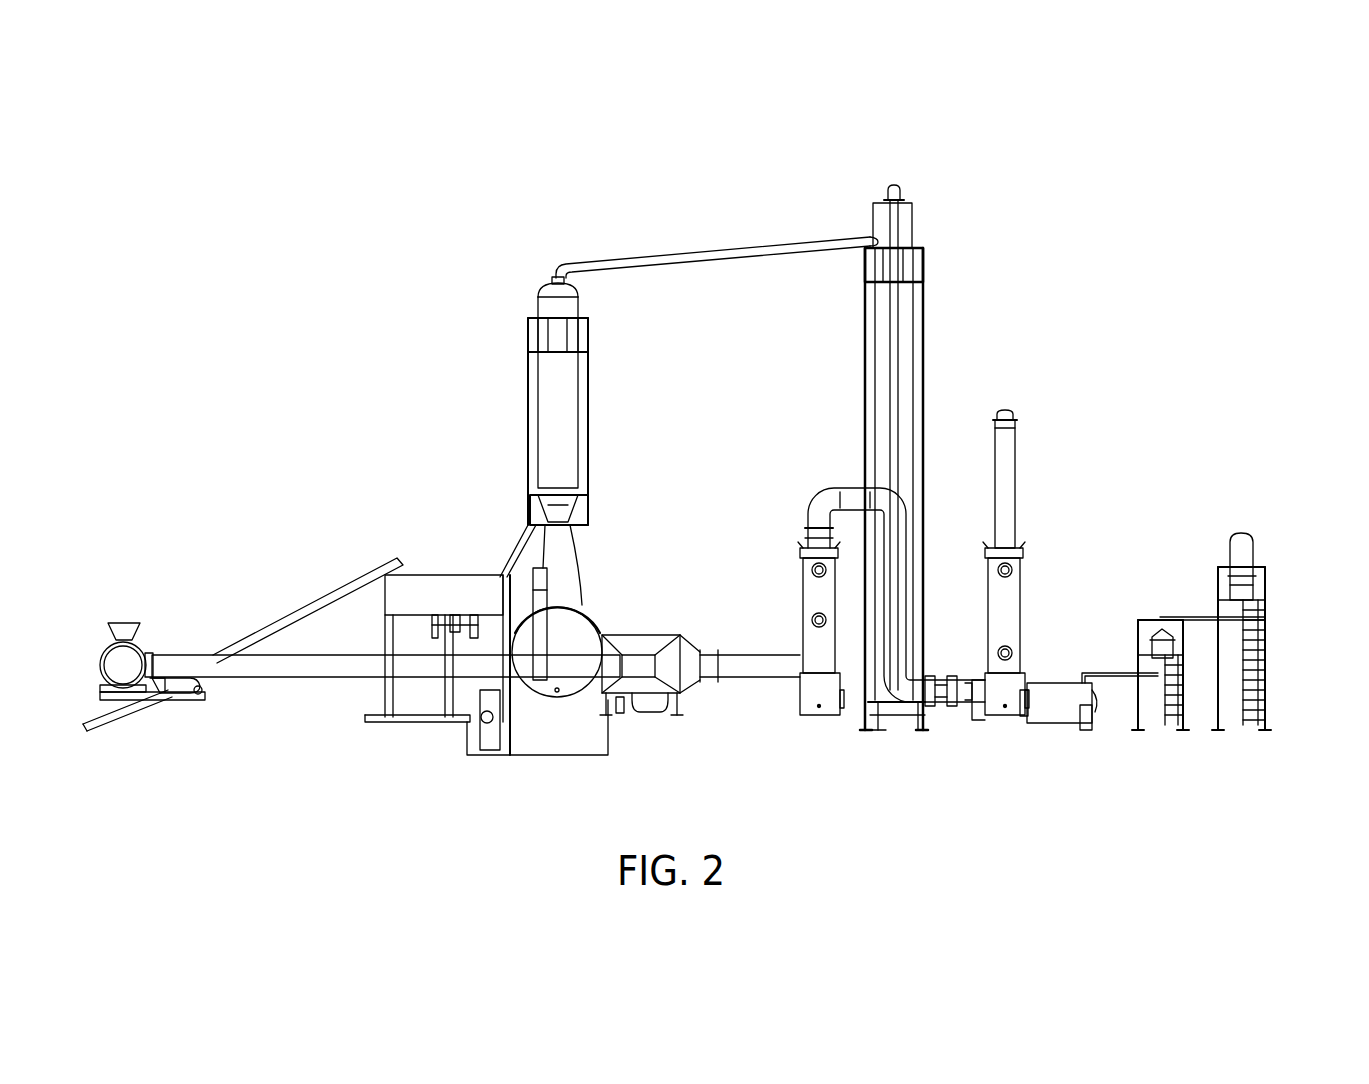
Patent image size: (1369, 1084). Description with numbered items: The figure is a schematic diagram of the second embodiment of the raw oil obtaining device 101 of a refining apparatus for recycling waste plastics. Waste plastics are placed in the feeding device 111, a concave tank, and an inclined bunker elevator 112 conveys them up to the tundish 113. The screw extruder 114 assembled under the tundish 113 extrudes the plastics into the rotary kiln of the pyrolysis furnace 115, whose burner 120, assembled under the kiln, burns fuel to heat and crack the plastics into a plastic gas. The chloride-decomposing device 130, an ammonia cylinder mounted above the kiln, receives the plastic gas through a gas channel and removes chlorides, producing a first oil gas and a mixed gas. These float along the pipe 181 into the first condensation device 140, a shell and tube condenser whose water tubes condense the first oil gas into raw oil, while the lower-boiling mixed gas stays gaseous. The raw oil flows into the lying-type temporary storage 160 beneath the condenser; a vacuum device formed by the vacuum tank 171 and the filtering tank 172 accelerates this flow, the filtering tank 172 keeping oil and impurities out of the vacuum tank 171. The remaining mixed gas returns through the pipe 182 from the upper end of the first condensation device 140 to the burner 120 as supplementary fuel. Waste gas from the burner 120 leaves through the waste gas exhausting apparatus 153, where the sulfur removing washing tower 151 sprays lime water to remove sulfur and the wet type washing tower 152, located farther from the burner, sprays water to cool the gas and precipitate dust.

The raw oil obtaining device 101 is at (222, 234).
The feeding device 111 is at (130, 685).
The bunker elevator 112 is at (292, 620).
The tundish 113 is at (458, 590).
The screw extruder 114 is at (462, 627).
The pyrolysis furnace 115 is at (567, 685).
The burner 120 is at (530, 740).
The chloride-decomposing device 130 is at (548, 425).
The first condensation device 140 is at (905, 222).
The sulfur removing washing tower 151 is at (822, 660).
The wet type washing tower 152 is at (995, 627).
The waste gas exhausting apparatus 153 is at (1005, 475).
The temporary storage 160 is at (1058, 715).
The vacuum tank 171 is at (1245, 560).
The filtering tank 172 is at (1160, 645).
The pipe 181 is at (703, 255).
The pipe 182 is at (898, 327).